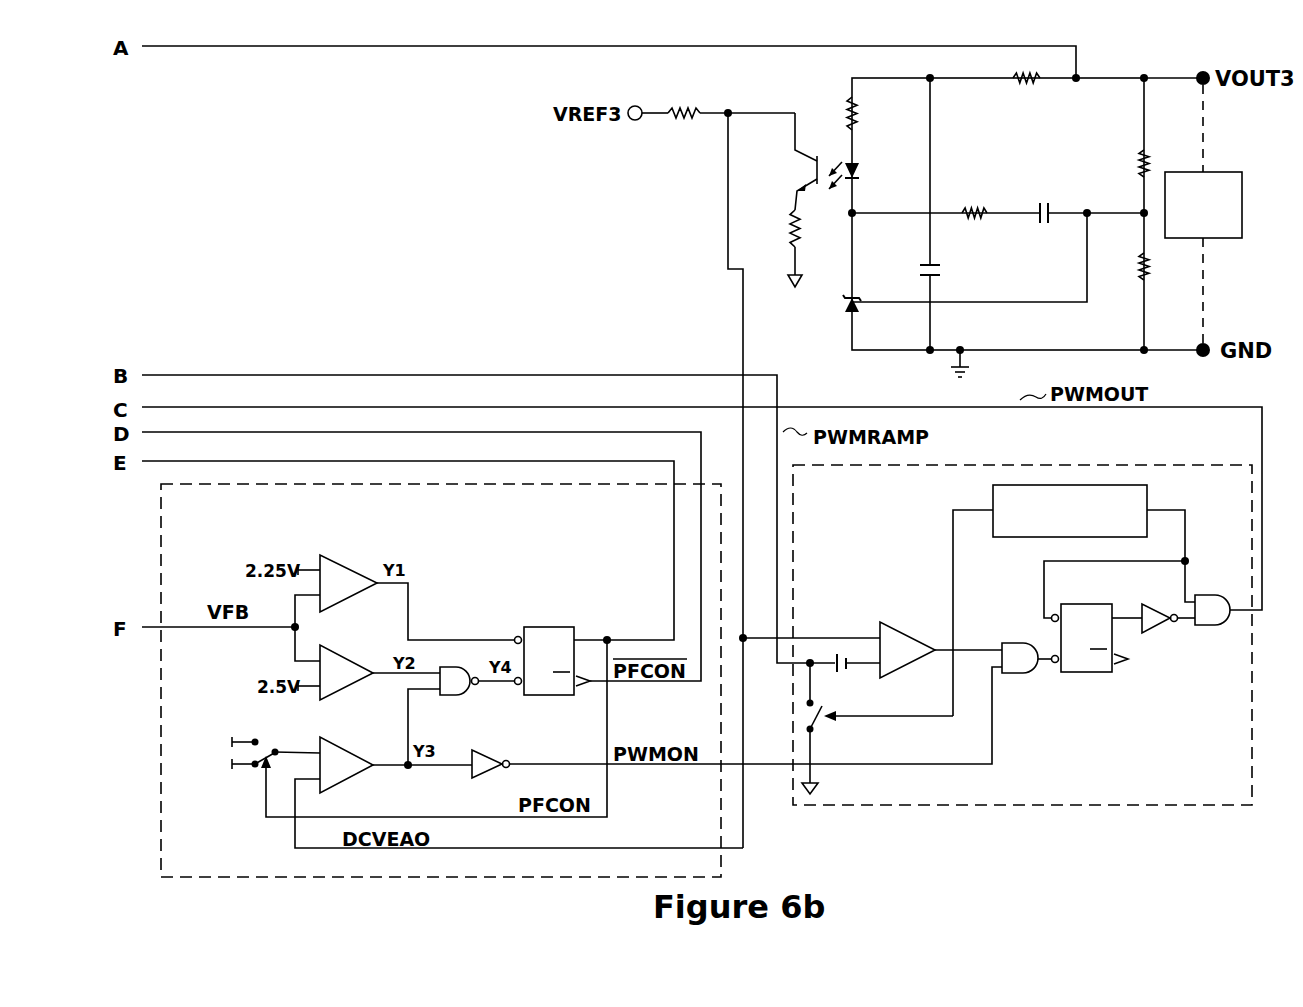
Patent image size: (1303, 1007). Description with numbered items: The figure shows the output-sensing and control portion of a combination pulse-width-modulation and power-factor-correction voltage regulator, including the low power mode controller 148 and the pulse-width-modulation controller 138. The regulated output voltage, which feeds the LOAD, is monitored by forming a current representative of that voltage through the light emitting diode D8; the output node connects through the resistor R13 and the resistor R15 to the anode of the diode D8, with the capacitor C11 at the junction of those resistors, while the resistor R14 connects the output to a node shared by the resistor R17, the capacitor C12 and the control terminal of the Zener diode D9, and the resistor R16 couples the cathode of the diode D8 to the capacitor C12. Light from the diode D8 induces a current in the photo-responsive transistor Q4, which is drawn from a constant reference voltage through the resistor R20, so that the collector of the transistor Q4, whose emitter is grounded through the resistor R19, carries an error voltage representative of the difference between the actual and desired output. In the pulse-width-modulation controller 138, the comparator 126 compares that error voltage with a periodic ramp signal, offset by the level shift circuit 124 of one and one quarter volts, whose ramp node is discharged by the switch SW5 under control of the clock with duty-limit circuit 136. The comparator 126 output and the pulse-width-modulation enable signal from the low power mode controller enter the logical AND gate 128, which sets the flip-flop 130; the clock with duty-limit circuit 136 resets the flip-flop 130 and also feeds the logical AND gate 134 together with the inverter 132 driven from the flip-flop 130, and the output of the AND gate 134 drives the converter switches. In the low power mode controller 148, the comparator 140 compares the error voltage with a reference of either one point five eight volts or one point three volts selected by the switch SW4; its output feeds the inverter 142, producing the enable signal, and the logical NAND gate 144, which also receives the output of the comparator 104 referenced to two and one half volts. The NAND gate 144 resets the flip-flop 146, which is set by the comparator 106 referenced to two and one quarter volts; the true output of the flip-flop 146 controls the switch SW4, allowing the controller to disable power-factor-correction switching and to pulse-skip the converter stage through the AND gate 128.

The comparator 104 is at (348, 648).
The comparator 106 is at (360, 569).
The 1.25 volt level shift circuit 124 is at (841, 625).
The comparator 126 is at (903, 628).
The logical AND gate 128 is at (1007, 640).
The flip-flop 130 is at (1083, 676).
The inverter 132 is at (1163, 633).
The logical AND gate 134 is at (1223, 592).
The clock with duty-limit circuit 136 is at (1077, 480).
The PWM controller 138 is at (1022, 662).
The comparator 140 is at (348, 742).
The inverter 142 is at (502, 752).
The logical NAND gate 144 is at (456, 660).
The flip-flop 146 is at (561, 616).
The low power mode controller 148 is at (724, 860).
The resistor R13 is at (1028, 104).
The resistor R14 is at (1103, 164).
The resistor R15 is at (883, 114).
The resistor R16 is at (975, 241).
The resistor R17 is at (1107, 293).
The resistor R19 is at (767, 228).
The resistor R20 is at (688, 100).
The capacitor C11 is at (900, 256).
The capacitor C12 is at (1050, 239).
The light emitting diode D8 is at (872, 174).
The Zener diode D9 is at (834, 303).
The photo-responsive transistor Q4 is at (799, 161).
The switch SW4 is at (249, 745).
The switch SW5 is at (877, 728).
The load LOAD is at (1203, 205).